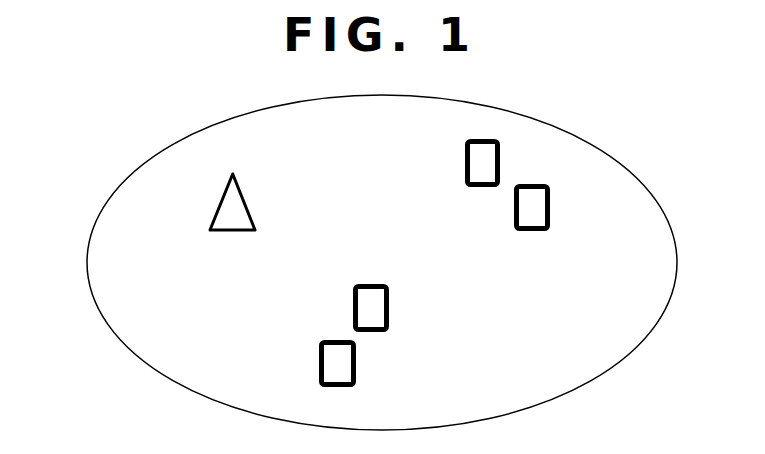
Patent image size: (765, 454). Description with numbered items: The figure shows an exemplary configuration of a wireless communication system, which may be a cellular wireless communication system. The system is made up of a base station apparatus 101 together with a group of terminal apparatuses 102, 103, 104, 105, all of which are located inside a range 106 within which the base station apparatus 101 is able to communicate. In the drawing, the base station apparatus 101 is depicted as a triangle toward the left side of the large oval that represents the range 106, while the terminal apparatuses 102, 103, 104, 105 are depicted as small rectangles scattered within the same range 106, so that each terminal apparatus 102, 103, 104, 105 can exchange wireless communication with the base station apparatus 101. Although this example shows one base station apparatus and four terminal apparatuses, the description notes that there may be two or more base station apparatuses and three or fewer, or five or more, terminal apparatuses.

The base station apparatus 101 is at (230, 205).
The terminal apparatus 102 is at (487, 160).
The terminal apparatus 103 is at (343, 360).
The terminal apparatus 104 is at (375, 305).
The terminal apparatus 105 is at (537, 204).
The range 106 is at (565, 130).